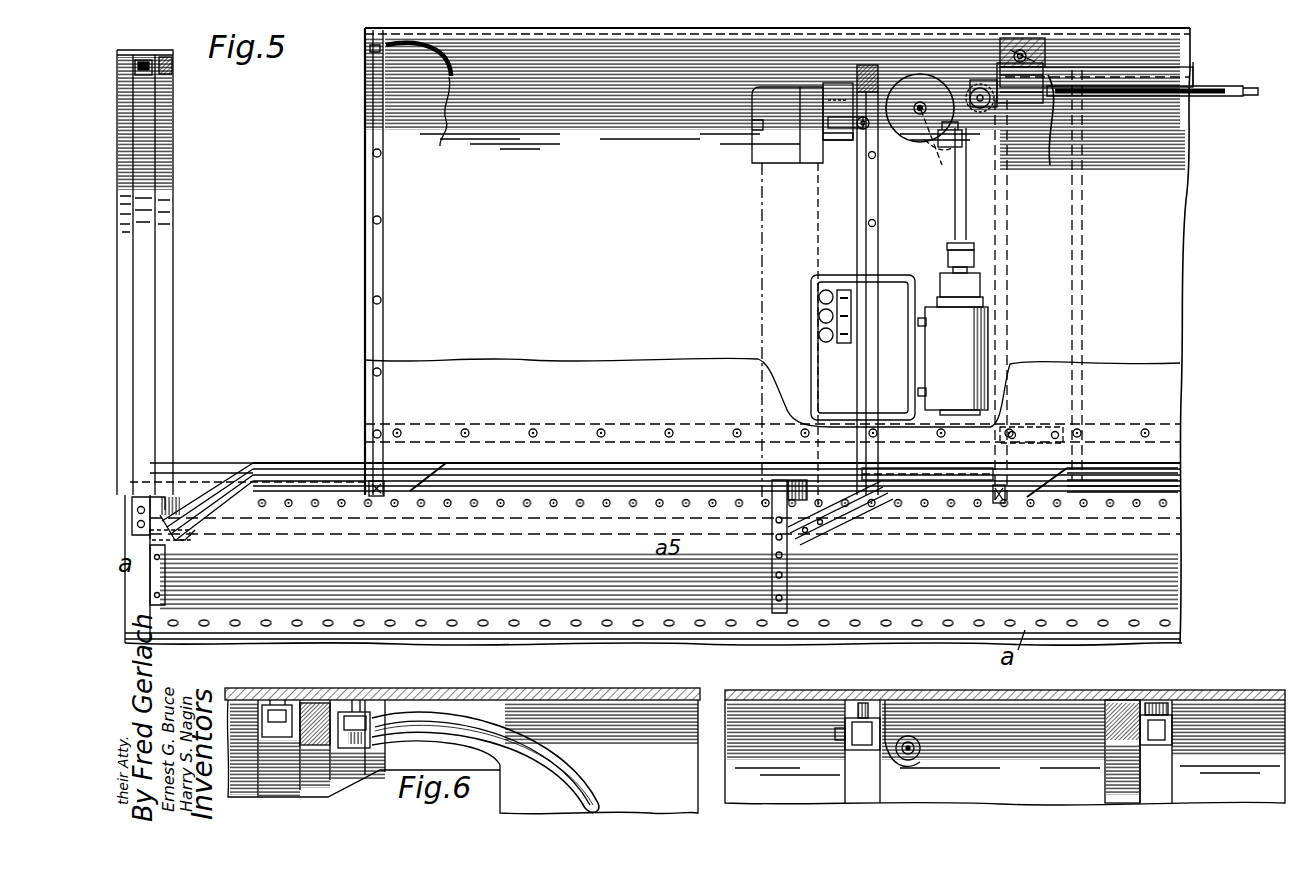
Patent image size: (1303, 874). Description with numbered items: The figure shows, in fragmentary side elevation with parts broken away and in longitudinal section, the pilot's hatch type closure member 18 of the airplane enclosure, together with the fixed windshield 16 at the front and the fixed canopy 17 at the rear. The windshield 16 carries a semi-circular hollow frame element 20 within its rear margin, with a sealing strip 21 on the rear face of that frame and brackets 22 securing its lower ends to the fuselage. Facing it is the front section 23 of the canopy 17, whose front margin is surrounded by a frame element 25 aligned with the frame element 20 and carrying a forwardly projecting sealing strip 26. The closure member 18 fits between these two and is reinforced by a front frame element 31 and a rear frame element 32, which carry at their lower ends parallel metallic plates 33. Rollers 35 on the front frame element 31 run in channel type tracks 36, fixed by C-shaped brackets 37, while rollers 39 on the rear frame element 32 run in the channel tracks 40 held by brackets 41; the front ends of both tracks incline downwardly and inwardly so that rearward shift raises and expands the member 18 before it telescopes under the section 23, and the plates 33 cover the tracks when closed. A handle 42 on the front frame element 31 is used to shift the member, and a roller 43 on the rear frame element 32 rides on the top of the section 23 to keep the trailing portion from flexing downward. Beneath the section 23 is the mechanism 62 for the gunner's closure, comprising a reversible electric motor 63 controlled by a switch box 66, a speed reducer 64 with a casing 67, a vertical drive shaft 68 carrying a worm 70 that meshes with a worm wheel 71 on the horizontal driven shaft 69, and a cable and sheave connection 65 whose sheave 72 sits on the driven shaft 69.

In FIG. 5, the windshield 16 is at (128, 50).
In FIG. 6, the windshield 16 is at (363, 728).
In FIG. 5, the canopy 17 is at (1160, 222).
In FIG. 5, the pilot's hatch type closure member 18 is at (405, 165).
In FIG. 6, the pilot's hatch type closure member 18 is at (620, 690).
In FIG. 5, the frame element 20 is at (173, 148).
In FIG. 6, the frame element 20 is at (290, 688).
In FIG. 5, the sealing strip 21 is at (172, 73).
In FIG. 6, the sealing strip 21 is at (322, 700).
In FIG. 5, the brackets 22 is at (165, 495).
In FIG. 5, the front section 23 is at (1147, 67).
In FIG. 6, the front section 23 is at (1256, 680).
In FIG. 5, the frame element 25 is at (855, 92).
In FIG. 6, the frame element 25 is at (1193, 698).
In FIG. 5, the sealing strip 26 is at (855, 180).
In FIG. 6, the sealing strip 26 is at (1135, 700).
In FIG. 5, the front frame element 31 is at (375, 195).
In FIG. 6, the front frame element 31 is at (405, 690).
In FIG. 5, the rear frame element 32 is at (1045, 48).
In FIG. 6, the rear frame element 32 is at (862, 787).
In FIG. 5, the metallic plates 33 is at (497, 447).
In FIG. 5, the rollers 35 is at (377, 497).
In FIG. 5, the channel type tracks 36 is at (283, 475).
In FIG. 5, the brackets 37 is at (213, 480).
In FIG. 5, the rollers 39 is at (1007, 514).
In FIG. 5, the channel tracks 40 is at (900, 495).
In FIG. 5, the brackets 41 is at (843, 490).
In FIG. 5, the handle 42 is at (425, 98).
In FIG. 6, the handle 42 is at (595, 778).
In FIG. 5, the roller 43 is at (1060, 133).
In FIG. 6, the roller 43 is at (922, 765).
In FIG. 5, the mechanism 62 is at (946, 230).
In FIG. 5, the reversible electric motor 63 is at (990, 323).
In FIG. 5, the speed reducer 64 is at (985, 135).
In FIG. 5, the cable and sheave connection 65 is at (940, 150).
In FIG. 5, the switch box 66 is at (825, 352).
In FIG. 5, the casing 67 is at (857, 138).
In FIG. 5, the drive shaft 68 is at (978, 184).
In FIG. 5, the driven shaft 69 is at (900, 150).
In FIG. 5, the worm 70 is at (1248, 74).
In FIG. 5, the worm wheel 71 is at (924, 160).
In FIG. 5, the sheave 72 is at (920, 108).